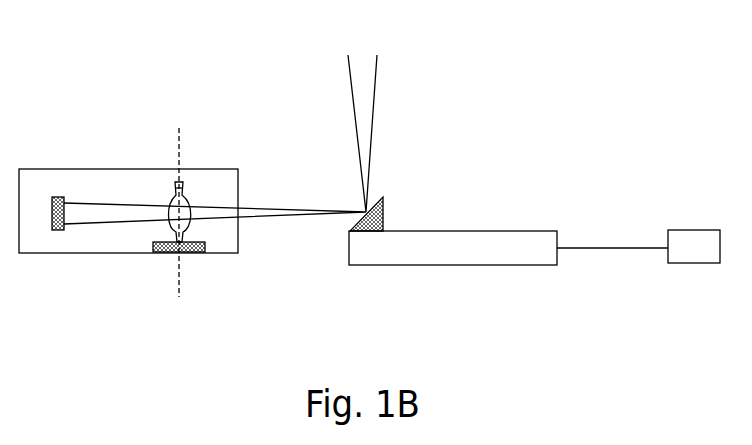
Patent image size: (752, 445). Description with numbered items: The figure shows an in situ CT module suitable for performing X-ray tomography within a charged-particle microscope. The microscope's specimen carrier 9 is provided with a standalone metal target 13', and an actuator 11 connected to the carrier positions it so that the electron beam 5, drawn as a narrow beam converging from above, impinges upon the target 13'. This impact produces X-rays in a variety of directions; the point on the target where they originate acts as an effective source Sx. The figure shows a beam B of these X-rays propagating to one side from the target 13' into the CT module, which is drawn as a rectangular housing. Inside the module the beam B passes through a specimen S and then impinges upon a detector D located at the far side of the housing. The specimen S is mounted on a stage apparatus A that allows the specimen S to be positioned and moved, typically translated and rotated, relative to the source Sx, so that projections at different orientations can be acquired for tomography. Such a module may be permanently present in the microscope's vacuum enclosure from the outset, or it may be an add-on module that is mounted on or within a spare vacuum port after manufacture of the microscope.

The electron beam 5 is at (363, 95).
The detector D is at (58, 229).
The beam of X-rays B is at (262, 212).
The stage apparatus A is at (163, 252).
The specimen S is at (184, 230).
The effective source Sx is at (349, 198).
The standalone metal target 13' is at (413, 198).
The specimen carrier 9 is at (400, 251).
The actuator 11 is at (682, 253).